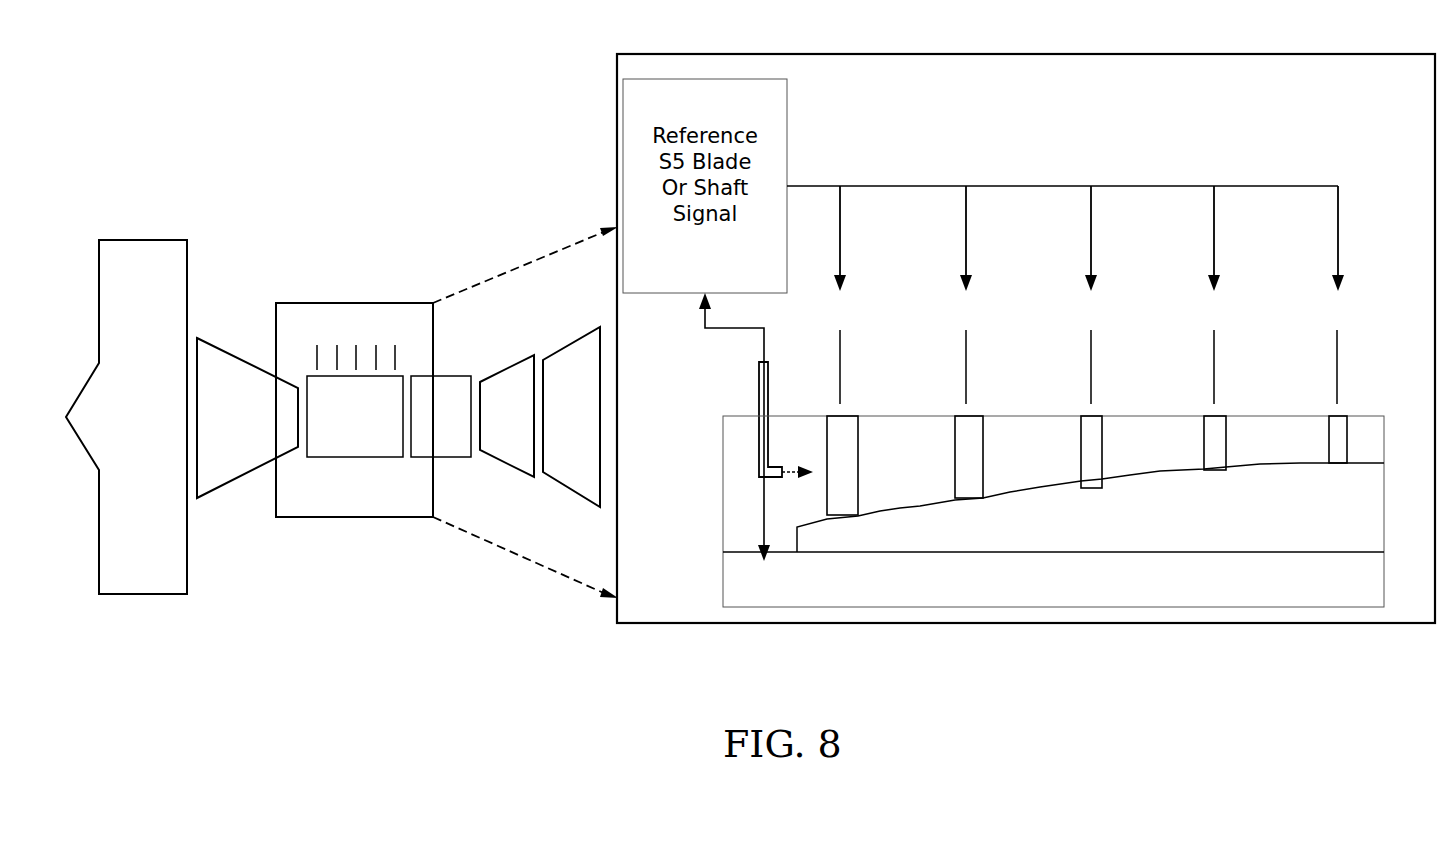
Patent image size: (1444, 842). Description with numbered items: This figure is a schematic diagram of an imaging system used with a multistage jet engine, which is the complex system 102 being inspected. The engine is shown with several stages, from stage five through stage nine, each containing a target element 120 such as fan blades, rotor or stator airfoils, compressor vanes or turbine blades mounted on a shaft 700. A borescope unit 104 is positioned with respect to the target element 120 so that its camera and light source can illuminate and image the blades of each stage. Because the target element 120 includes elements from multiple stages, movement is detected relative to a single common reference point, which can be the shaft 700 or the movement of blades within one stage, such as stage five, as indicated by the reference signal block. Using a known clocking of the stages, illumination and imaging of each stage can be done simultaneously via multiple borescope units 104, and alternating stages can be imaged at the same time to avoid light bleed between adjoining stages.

The complex system 102 is at (224, 80).
The borescope unit 104 is at (762, 418).
The target element 120 is at (858, 428).
The shaft 700 is at (723, 580).